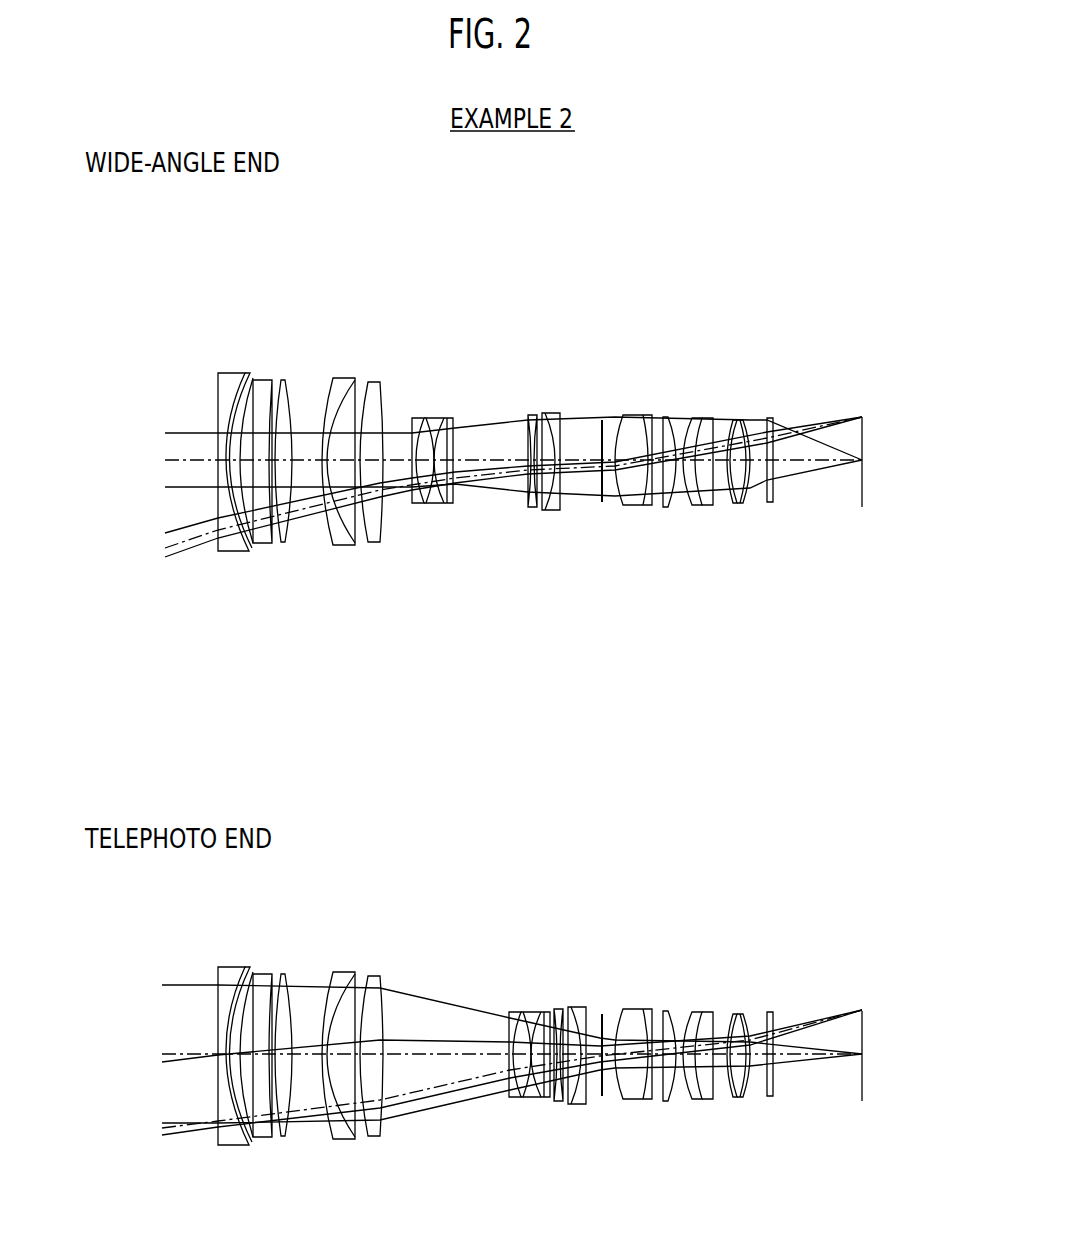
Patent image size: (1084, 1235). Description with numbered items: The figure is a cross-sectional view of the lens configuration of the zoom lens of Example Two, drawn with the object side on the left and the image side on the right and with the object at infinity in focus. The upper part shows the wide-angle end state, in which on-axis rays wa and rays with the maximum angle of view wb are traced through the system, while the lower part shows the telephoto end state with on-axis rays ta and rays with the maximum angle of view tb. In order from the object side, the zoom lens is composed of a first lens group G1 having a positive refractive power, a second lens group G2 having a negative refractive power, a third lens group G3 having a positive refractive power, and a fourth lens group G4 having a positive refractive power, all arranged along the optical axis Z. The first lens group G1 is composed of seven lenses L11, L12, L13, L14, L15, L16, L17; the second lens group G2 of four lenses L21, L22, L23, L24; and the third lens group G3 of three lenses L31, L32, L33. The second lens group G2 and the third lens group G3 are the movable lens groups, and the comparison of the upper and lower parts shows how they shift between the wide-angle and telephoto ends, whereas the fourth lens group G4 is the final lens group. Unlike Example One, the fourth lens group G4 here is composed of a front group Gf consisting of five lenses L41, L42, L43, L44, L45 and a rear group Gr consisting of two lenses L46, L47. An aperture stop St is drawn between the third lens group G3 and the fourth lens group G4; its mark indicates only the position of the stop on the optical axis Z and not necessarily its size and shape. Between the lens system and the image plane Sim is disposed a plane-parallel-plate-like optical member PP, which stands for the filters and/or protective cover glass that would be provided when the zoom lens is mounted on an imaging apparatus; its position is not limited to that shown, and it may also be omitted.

The lens L11 is at (228, 386).
The lens L12 is at (247, 376).
The lens L13 is at (262, 379).
The lens L14 is at (283, 381).
The lens L15 is at (338, 378).
The lens L16 is at (350, 380).
The lens L17 is at (368, 407).
The lens L21 is at (418, 418).
The lens L22 is at (430, 418).
The lens L23 is at (440, 418).
The lens L24 is at (450, 418).
The lens L31 is at (533, 415).
The lens L32 is at (548, 413).
The lens L33 is at (556, 413).
The lens L41 is at (635, 415).
The lens L42 is at (667, 417).
The lens L43 is at (697, 418).
The lens L44 is at (707, 418).
The lens L45 is at (733, 420).
The lens L46 is at (742, 420).
The lens L47 is at (746, 420).
The first lens group G1 is at (266, 689).
The second lens group G2 is at (472, 665).
The third lens group G3 is at (580, 669).
The fourth lens group G4 is at (740, 646).
The front group Gf is at (703, 370).
The rear group Gr is at (801, 368).
The aperture stop St is at (600, 503).
The optical member PP is at (773, 503).
The image plane Sim is at (864, 505).
The optical axis Z is at (172, 434).
The on-axis rays wa is at (155, 433).
The rays with the maximum angle of view wb is at (155, 528).
The on-axis rays ta is at (118, 977).
The rays with the maximum angle of view tb is at (156, 1058).